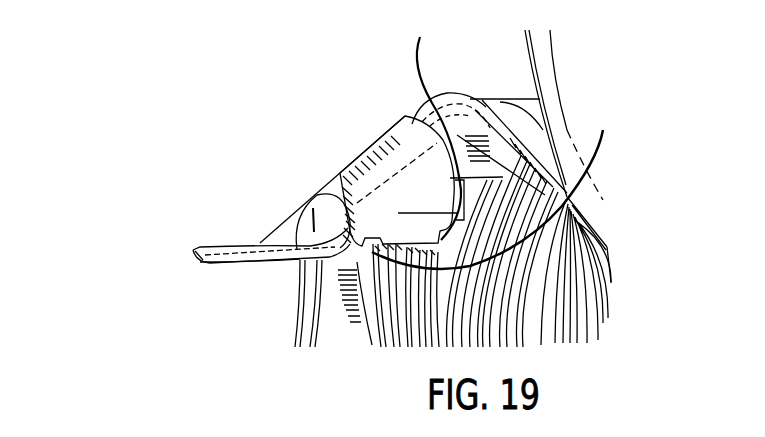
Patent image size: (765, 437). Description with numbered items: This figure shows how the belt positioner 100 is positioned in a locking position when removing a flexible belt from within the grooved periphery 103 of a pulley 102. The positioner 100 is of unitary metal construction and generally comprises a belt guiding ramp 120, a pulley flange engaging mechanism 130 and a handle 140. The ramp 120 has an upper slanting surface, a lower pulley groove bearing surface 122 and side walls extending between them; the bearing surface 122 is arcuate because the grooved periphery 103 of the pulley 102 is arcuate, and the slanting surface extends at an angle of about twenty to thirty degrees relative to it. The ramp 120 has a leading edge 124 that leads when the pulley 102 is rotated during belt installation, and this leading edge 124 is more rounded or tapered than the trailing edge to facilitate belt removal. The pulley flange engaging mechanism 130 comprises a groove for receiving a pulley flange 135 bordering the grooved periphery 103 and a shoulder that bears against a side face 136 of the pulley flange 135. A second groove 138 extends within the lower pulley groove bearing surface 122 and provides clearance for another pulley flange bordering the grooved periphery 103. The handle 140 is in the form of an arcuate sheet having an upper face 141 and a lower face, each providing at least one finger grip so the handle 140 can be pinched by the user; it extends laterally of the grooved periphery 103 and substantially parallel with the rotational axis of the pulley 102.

The belt positioner 100 is at (204, 286).
The pulley 102 is at (323, 292).
The grooved periphery 103 is at (398, 318).
The belt guiding ramp 120 is at (356, 149).
The lower pulley groove bearing surface 122 is at (450, 248).
The leading edge 124 is at (407, 170).
The pulley flange engaging mechanism 130 is at (501, 178).
The pulley flange 135 is at (356, 256).
The side face 136 is at (378, 334).
The second groove 138 is at (431, 120).
The handle 140 is at (210, 236).
The upper face 141 is at (230, 250).